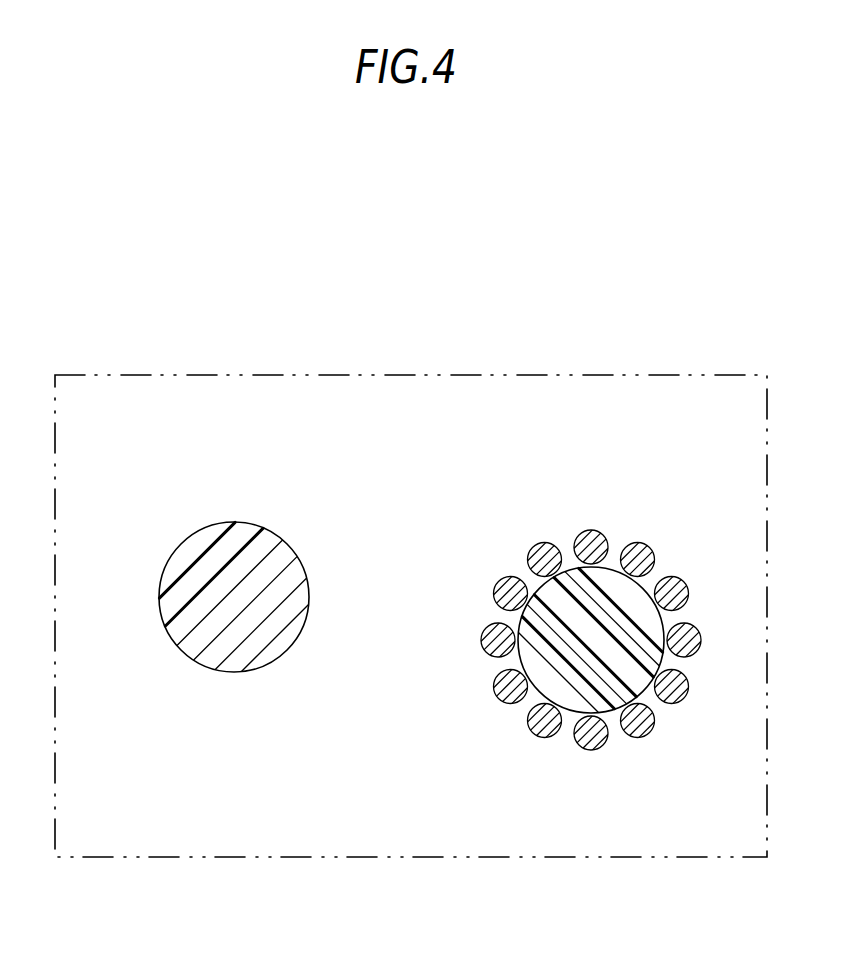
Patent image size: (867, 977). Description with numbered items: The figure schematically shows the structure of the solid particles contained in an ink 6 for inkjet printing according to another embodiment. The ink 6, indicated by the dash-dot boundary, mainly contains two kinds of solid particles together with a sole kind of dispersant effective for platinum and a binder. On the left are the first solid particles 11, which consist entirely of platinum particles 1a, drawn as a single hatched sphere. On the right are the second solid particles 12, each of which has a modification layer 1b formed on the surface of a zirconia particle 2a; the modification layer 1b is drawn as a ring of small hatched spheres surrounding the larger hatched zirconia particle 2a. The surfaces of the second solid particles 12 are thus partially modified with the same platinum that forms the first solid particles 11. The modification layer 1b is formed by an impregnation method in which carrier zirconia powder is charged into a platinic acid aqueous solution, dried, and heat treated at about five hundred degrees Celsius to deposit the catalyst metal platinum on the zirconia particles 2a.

The ink 6 is at (411, 374).
The first solid particles 11 is at (247, 522).
The platinum particles 1a is at (236, 645).
The second solid particles 12 is at (560, 533).
The zirconia particles 2a is at (572, 695).
The modification layer 1b is at (597, 531).